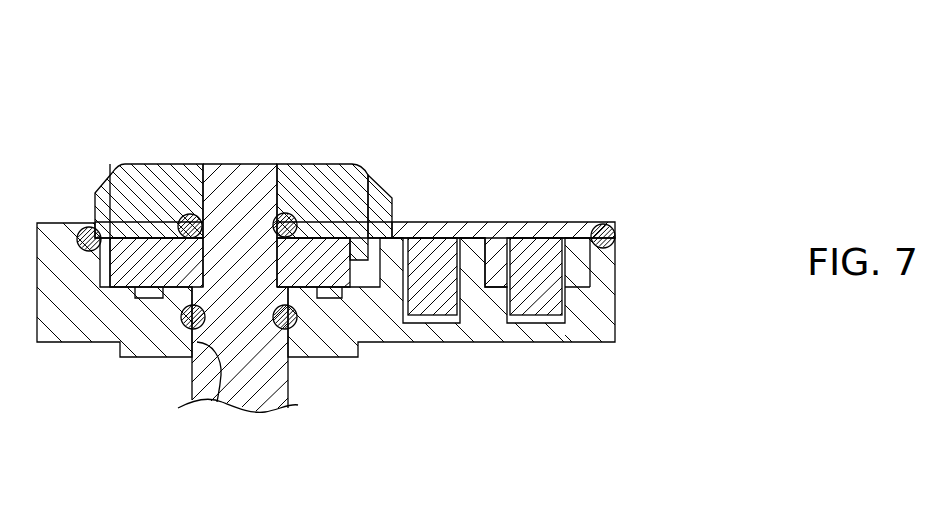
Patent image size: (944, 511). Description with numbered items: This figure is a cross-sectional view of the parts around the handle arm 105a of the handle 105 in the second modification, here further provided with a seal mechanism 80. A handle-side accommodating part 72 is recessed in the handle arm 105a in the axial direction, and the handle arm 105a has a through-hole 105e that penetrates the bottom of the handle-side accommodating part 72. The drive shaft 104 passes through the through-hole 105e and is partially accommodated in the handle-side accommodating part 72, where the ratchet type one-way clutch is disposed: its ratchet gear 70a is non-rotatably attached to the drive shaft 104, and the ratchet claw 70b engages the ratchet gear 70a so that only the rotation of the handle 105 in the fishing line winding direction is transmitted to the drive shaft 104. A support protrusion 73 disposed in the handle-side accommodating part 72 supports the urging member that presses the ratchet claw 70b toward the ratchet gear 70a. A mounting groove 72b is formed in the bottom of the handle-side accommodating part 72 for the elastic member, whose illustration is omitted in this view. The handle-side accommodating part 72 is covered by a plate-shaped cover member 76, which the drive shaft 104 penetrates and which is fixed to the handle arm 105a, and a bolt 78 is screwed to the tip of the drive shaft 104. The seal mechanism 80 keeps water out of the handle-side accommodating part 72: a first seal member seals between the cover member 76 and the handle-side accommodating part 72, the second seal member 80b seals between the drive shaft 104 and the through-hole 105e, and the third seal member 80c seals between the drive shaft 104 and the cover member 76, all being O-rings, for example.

The handle 105 is at (65, 345).
The handle arm 105a is at (63, 250).
The through-hole 105e is at (217, 402).
The drive shaft 104 is at (243, 193).
The bolt 78 is at (124, 164).
The ratchet gear 70a is at (165, 222).
The ratchet claw 70b is at (398, 222).
The handle-side accommodating part 72 is at (345, 185).
The mounting groove 72b is at (357, 277).
The cover member 76 is at (478, 230).
The support protrusion 73 is at (540, 265).
The seal mechanism 80 is at (601, 224).
The second seal member 80b is at (290, 350).
The third seal member 80c is at (296, 232).